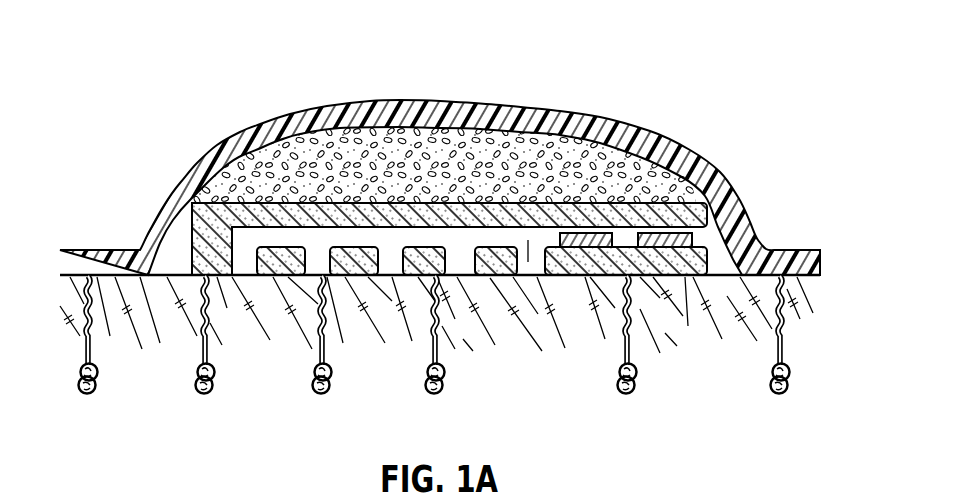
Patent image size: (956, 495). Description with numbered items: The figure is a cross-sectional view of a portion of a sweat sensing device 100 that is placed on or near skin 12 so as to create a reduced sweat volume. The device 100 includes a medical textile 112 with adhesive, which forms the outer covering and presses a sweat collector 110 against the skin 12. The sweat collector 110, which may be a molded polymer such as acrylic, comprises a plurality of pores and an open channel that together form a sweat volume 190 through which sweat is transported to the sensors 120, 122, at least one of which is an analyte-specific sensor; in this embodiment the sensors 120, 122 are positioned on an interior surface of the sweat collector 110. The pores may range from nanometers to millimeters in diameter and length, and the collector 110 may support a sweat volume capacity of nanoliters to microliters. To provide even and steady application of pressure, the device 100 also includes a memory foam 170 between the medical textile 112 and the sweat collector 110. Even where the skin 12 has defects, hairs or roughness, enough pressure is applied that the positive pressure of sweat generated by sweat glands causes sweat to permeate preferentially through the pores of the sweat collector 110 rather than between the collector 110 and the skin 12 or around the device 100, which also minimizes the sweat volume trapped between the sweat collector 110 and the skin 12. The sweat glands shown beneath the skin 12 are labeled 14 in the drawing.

The sweat sensing device 100 is at (152, 58).
The medical textile 112 is at (450, 100).
The memory foam 170 is at (370, 153).
The sweat collector 110 is at (255, 213).
The sensor 120 is at (597, 240).
The sensor 122 is at (667, 240).
The sweat volume 190 is at (528, 262).
The skin 12 is at (700, 327).
The wire knots 14 is at (100, 383).